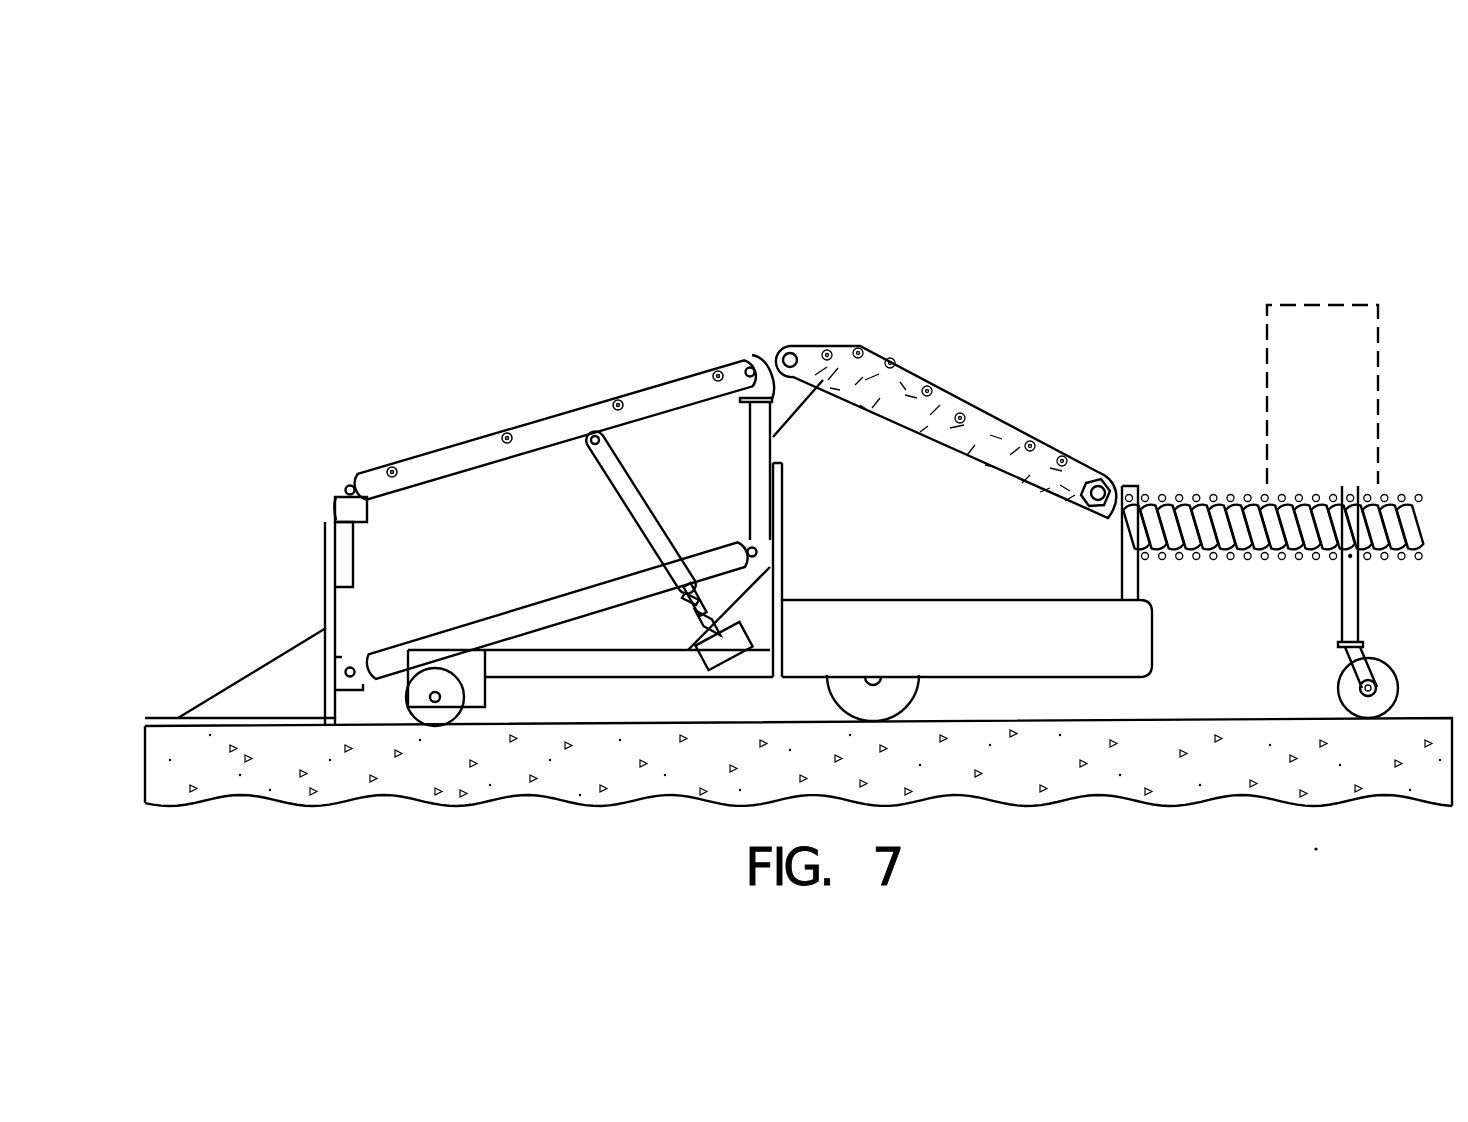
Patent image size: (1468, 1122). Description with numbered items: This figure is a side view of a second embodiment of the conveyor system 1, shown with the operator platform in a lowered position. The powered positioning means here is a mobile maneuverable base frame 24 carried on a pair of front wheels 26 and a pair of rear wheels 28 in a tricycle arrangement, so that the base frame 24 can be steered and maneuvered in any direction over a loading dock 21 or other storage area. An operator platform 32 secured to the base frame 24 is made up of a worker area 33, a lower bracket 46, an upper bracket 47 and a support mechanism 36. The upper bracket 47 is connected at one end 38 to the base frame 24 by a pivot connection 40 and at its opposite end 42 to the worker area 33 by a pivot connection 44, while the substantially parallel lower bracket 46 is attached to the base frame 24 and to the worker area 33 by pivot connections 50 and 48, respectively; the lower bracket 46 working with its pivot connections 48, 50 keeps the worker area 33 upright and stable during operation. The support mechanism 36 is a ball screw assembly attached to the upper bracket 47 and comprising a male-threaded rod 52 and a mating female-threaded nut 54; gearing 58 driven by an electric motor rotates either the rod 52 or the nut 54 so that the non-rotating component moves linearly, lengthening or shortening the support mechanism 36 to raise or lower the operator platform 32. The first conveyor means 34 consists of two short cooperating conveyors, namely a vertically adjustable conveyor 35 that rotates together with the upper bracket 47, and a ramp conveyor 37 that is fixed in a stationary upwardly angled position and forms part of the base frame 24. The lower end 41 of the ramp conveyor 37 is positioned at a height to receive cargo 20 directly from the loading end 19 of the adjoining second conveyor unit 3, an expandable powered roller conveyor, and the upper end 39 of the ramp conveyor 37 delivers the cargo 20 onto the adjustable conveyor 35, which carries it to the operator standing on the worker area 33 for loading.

The conveyor system 1 is at (233, 273).
The second conveyor unit 3 is at (1432, 522).
The loading end 19 is at (1160, 464).
The cargo 20 is at (1266, 325).
The loading dock 21 is at (1188, 718).
The mobile maneuverable base frame 24 is at (760, 250).
The front wheels 26 is at (420, 718).
The rear wheels 28 is at (915, 690).
The operator platform 32 is at (430, 358).
The worker area 33 is at (325, 600).
The first conveyor means 34 is at (632, 303).
The adjustable conveyor 35 is at (538, 410).
The support mechanism 36 is at (628, 542).
The ramp conveyor 37 is at (955, 393).
The end of upper bracket 38 is at (735, 352).
The upper end 39 is at (783, 345).
The pivot connection 40 is at (745, 388).
The lower end 41 is at (1118, 485).
The opposite end of upper bracket 42 is at (354, 466).
The pivot connection 44 is at (341, 487).
The lower bracket 46 is at (515, 605).
The upper bracket 47 is at (473, 480).
The pivot connection 48 is at (348, 670).
The pivot connection 50 is at (745, 548).
The rod 52 is at (694, 612).
The nut 54 is at (678, 594).
The gearing 58 is at (703, 674).